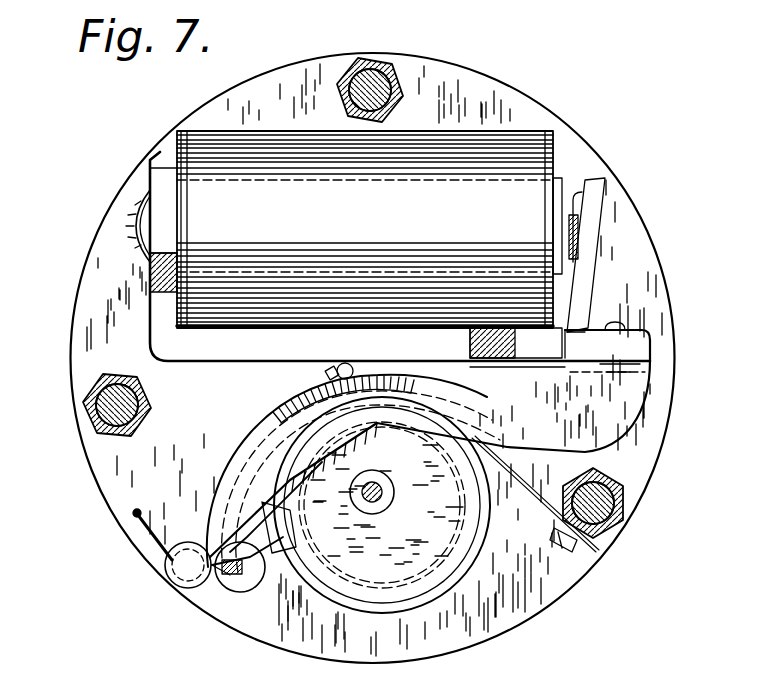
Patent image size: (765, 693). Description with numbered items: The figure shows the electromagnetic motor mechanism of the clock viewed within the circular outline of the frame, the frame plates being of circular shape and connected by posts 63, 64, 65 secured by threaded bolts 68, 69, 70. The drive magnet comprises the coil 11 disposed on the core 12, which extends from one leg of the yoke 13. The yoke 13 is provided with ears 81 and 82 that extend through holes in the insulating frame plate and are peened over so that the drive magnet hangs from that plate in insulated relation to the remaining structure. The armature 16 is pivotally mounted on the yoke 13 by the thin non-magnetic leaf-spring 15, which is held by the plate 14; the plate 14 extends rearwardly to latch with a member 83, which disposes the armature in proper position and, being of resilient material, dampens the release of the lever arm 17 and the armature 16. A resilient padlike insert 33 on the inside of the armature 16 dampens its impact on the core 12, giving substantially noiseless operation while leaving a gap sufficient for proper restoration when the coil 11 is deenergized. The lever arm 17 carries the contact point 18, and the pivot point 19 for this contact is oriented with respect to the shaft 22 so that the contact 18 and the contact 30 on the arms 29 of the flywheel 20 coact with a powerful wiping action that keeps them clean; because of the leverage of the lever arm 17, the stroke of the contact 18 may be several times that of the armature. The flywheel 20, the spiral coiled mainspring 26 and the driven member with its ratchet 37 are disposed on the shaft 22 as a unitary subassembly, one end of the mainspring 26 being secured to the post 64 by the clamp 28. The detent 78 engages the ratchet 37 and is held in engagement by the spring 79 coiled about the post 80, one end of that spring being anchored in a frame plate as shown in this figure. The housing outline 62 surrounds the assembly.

The coil 11 is at (485, 131).
The core 12 is at (562, 176).
The yoke 13 is at (215, 358).
The plate 14 is at (506, 385).
The leaf-spring 15 is at (404, 364).
The armature 16 is at (597, 226).
The lever arm 17 is at (384, 456).
The contact point 18 is at (205, 590).
The pivot point 19 is at (578, 338).
The flywheel 20 is at (476, 558).
The shaft 22 is at (394, 492).
The spiral coiled mainspring 26 is at (520, 496).
The clamp 28 is at (590, 552).
The arms 29 is at (276, 560).
The contact 30 is at (244, 592).
The resilient yieldable padlike insert 33 is at (580, 190).
The ratchet 37 is at (275, 446).
The housing 62 is at (566, 600).
The post 63 is at (100, 425).
The post 64 is at (625, 508).
The post 65 is at (390, 85).
The threaded bolt 68 is at (83, 404).
The threaded bolt 69 is at (620, 492).
The threaded bolt 70 is at (370, 75).
The detent 78 is at (268, 425).
The spring 79 is at (232, 492).
The post 80 is at (170, 580).
The ear 81 is at (165, 282).
The ear 82 is at (516, 343).
The member 83 is at (346, 364).